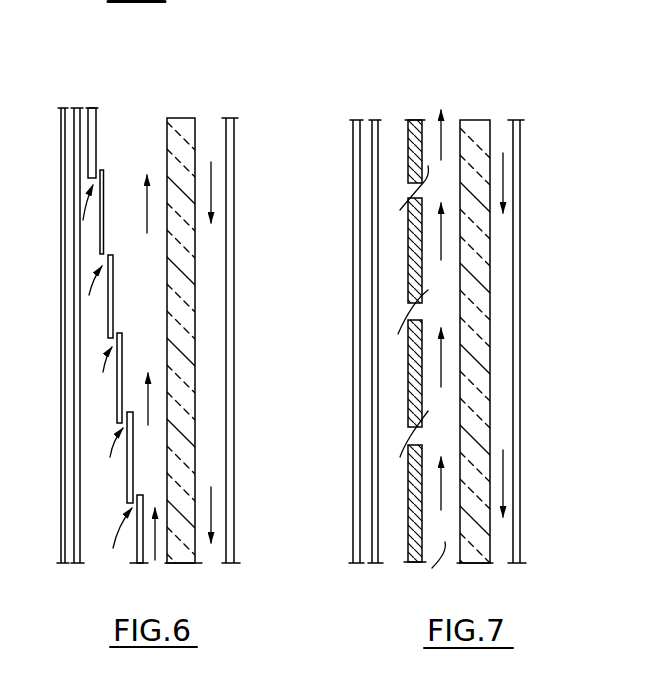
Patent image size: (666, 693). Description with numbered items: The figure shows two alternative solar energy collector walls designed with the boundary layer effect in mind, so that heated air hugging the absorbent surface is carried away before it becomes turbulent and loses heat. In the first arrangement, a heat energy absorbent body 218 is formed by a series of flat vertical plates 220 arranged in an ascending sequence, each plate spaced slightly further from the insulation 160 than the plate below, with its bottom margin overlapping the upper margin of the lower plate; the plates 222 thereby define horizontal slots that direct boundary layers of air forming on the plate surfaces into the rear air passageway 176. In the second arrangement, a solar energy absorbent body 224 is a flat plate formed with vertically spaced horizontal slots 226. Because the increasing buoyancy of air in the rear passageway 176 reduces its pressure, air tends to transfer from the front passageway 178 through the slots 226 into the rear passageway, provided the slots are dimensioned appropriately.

In FIG. 6, the heat energy absorbent body 218 is at (106, 124).
In FIG. 6, the flat vertical plates 220 is at (112, 268).
In FIG. 6, the louver slats 222 is at (110, 338).
In FIG. 6, the insulation 160 is at (187, 334).
In FIG. 7, the insulation 160 is at (475, 542).
In FIG. 7, the solar energy absorbent body 224 is at (421, 110).
In FIG. 7, the horizontal slots 226 is at (410, 302).
In FIG. 7, the front passageway 178 is at (387, 525).
In FIG. 7, the rear air passageway 176 is at (450, 413).